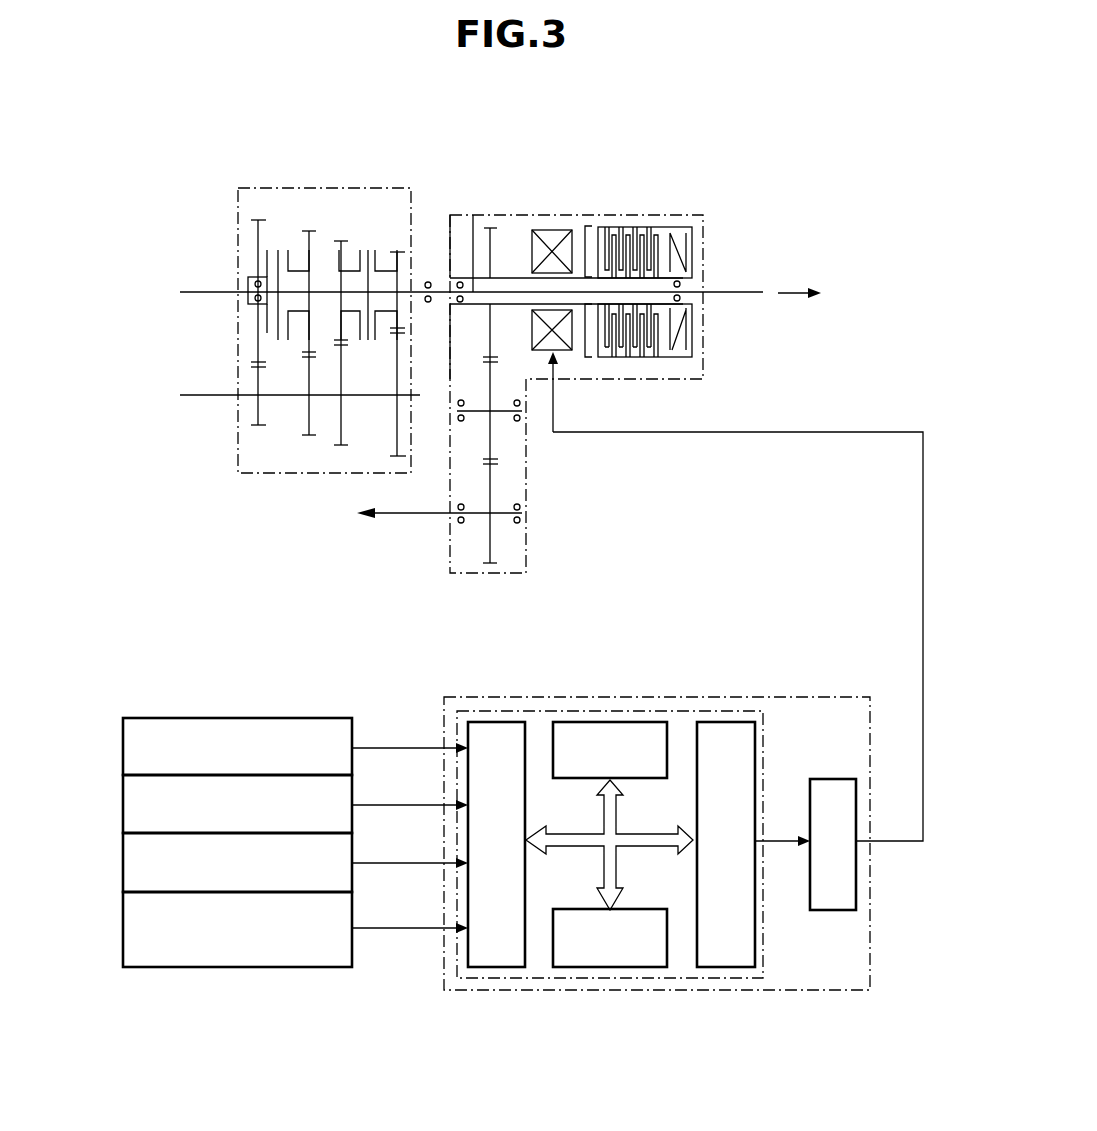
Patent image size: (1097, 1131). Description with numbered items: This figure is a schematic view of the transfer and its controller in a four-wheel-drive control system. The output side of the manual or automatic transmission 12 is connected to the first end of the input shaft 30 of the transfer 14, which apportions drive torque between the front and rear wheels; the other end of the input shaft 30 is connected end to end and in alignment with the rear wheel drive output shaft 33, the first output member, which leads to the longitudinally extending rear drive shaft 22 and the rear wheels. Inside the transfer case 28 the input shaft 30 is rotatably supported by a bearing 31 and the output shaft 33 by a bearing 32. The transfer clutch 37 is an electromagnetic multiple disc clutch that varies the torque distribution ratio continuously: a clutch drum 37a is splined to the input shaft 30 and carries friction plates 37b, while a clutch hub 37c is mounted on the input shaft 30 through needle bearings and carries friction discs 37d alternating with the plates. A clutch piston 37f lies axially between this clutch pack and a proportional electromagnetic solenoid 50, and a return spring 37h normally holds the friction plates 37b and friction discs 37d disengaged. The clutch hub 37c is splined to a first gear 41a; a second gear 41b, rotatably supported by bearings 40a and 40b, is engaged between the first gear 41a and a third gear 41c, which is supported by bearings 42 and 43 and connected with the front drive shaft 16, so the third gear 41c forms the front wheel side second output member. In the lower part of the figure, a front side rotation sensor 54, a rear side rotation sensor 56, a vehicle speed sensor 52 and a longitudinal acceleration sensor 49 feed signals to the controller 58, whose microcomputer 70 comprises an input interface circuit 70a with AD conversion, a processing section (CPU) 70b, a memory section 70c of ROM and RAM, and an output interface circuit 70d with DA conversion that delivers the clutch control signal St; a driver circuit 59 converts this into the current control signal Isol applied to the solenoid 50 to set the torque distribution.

The transmission 12 is at (333, 184).
The transfer 14 is at (516, 210).
The front drive shaft 16 is at (421, 517).
The rear drive shaft 22 is at (762, 291).
The transfer case 28 is at (602, 226).
The input shaft 30 is at (470, 276).
The bearing 31 is at (457, 300).
The bearing 32 is at (682, 282).
The rear wheel drive output shaft 33 is at (718, 291).
The transfer clutch 37 is at (673, 365).
The clutch drum 37a is at (672, 236).
The friction plates 37b is at (618, 233).
The clutch hub 37c is at (478, 275).
The friction discs 37d is at (648, 232).
The clutch piston 37f is at (586, 226).
The return spring 37h is at (704, 228).
The bearing 40a is at (496, 443).
The bearing 40b is at (466, 418).
The first gear 41a is at (490, 343).
The second gear 41b is at (522, 419).
The third gear 41c is at (492, 539).
The bearing 42 is at (457, 507).
The bearing 43 is at (522, 508).
The longitudinal acceleration sensor 49 is at (123, 929).
The proportional electromagnetic solenoid 50 is at (553, 230).
The vehicle speed sensor 52 is at (123, 864).
The front side rotation sensor 54 is at (123, 748).
The rear side rotation sensor 56 is at (123, 806).
The controller 58 is at (782, 697).
The driver circuit 59 is at (826, 779).
The microcomputer 70 is at (671, 711).
The input interface circuit 70a is at (495, 722).
The processing section 70b is at (605, 722).
The memory section 70c is at (615, 967).
The output interface circuit 70d is at (727, 967).